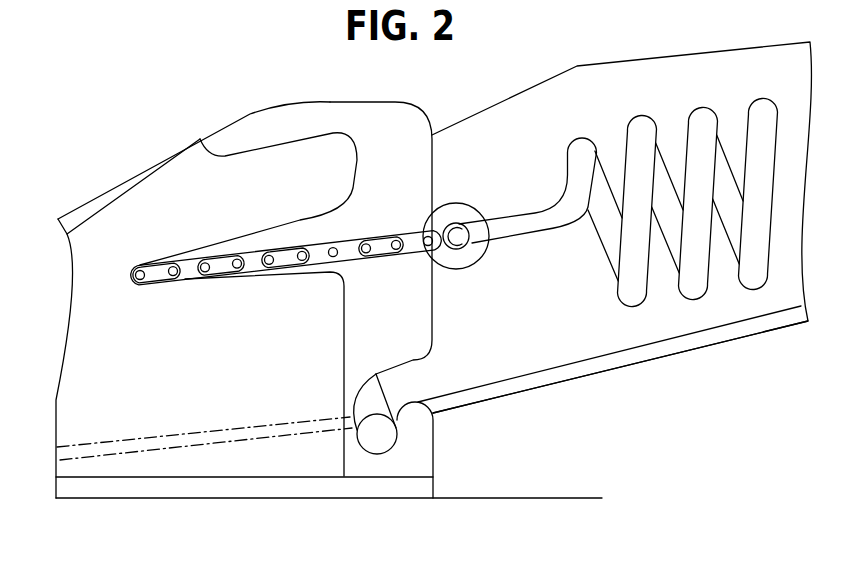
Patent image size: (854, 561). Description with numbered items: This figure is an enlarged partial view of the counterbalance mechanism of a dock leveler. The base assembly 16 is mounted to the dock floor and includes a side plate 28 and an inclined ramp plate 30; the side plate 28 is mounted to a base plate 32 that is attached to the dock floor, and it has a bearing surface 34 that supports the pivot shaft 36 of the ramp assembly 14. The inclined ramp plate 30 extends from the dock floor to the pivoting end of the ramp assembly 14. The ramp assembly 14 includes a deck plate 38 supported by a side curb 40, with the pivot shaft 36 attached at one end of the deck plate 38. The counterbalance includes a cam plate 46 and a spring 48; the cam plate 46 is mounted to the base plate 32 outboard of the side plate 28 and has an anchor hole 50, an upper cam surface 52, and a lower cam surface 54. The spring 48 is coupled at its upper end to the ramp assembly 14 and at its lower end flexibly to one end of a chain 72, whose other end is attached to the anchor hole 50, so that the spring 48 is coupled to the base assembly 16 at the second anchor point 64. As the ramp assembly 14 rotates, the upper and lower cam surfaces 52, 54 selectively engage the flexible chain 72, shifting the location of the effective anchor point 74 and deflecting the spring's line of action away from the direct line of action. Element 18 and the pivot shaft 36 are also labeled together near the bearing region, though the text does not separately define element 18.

The ramp assembly 14 is at (614, 221).
The side curb 40 is at (614, 221).
The base assembly 16 is at (193, 300).
The side plate 28 is at (148, 163).
The cam plate 46 is at (280, 140).
The spring 48 is at (580, 133).
The upper cam surface 52 is at (267, 260).
The chain 72 is at (348, 237).
The anchor hole 50 is at (145, 308).
The second anchor point 64 is at (145, 308).
The effective anchor point 74 is at (140, 280).
The lower cam surface 54 is at (295, 275).
The base member 18 is at (458, 450).
The pivot shaft 36 is at (383, 433).
The deck plate 38 is at (578, 378).
The inclined ramp plate 30 is at (140, 452).
The base plate 32 is at (272, 500).
The bearing surface 34 is at (375, 455).